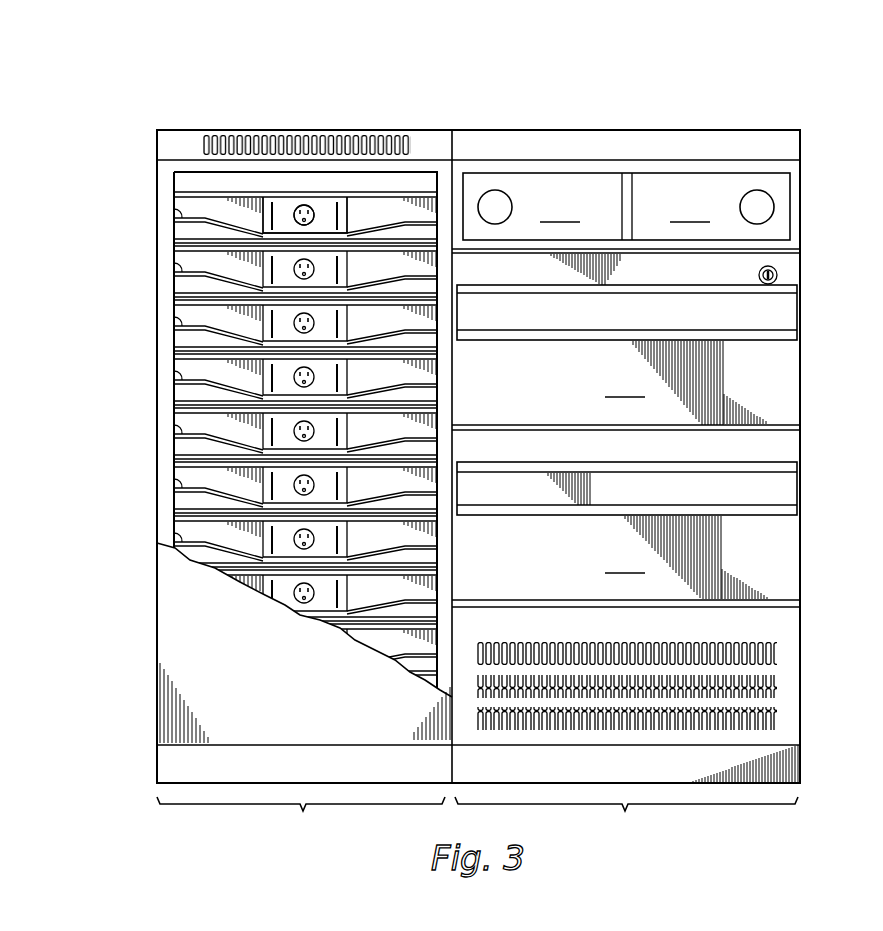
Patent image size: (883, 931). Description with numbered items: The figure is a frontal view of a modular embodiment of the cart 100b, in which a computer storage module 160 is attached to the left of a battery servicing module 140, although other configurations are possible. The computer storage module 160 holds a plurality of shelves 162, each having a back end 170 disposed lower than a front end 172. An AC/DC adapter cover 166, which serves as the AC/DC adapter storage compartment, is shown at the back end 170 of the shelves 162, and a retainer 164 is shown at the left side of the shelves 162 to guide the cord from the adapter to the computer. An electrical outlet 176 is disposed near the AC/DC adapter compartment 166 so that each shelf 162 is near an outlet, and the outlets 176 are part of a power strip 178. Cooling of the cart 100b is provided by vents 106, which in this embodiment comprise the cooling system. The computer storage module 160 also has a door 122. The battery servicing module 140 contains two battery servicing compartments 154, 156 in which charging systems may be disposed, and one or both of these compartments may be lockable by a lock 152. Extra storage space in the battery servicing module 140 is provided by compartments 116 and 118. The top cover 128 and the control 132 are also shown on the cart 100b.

The cart 100b is at (612, 72).
The vents 106 is at (203, 145).
The compartment 116 is at (626, 206).
The compartment 118 is at (722, 207).
The door 122 is at (172, 617).
The top cover 128 is at (733, 130).
The control knob 132 is at (493, 208).
The battery servicing module 140 is at (626, 820).
The lock 152 is at (777, 273).
The battery servicing compartment 154 is at (627, 339).
The battery servicing compartment 156 is at (627, 530).
The computer storage module 160 is at (301, 820).
The shelves 162 is at (185, 340).
The retainer 164 is at (185, 268).
The AC/DC adapter storage compartment 166 is at (185, 203).
The back end 170 is at (185, 500).
The front end 172 is at (185, 448).
The electrical outlet 176 is at (315, 212).
The power strip 178 is at (287, 212).